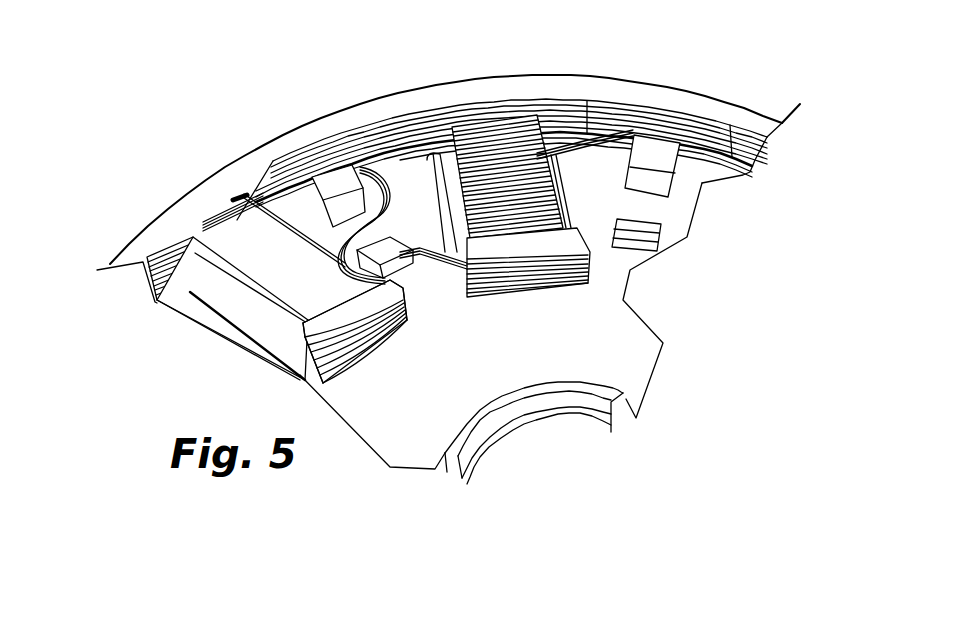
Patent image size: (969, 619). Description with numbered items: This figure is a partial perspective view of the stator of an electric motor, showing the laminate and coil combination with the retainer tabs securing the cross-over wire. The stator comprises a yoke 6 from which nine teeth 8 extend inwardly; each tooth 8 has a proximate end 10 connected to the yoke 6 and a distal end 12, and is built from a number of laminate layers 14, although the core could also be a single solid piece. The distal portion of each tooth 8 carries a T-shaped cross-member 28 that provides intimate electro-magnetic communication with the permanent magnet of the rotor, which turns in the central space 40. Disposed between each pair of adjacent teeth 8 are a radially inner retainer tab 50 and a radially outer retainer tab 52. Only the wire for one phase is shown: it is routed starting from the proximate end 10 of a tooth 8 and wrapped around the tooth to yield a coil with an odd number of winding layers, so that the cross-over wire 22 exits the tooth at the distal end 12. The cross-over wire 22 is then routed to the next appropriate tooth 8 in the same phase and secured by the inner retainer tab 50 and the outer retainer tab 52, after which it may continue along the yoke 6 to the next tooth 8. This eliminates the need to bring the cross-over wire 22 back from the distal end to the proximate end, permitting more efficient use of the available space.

The yoke 6 is at (507, 92).
The tooth 8 is at (240, 243).
The proximate end 10 is at (190, 297).
The distal end 12 is at (303, 325).
The laminate layers 14 is at (587, 280).
The cross-over wire 22 is at (407, 157).
The cross-member 28 is at (353, 310).
The space 40 is at (400, 433).
The inner retainer tab 50 is at (658, 246).
The outer retainer tab 52 is at (338, 182).